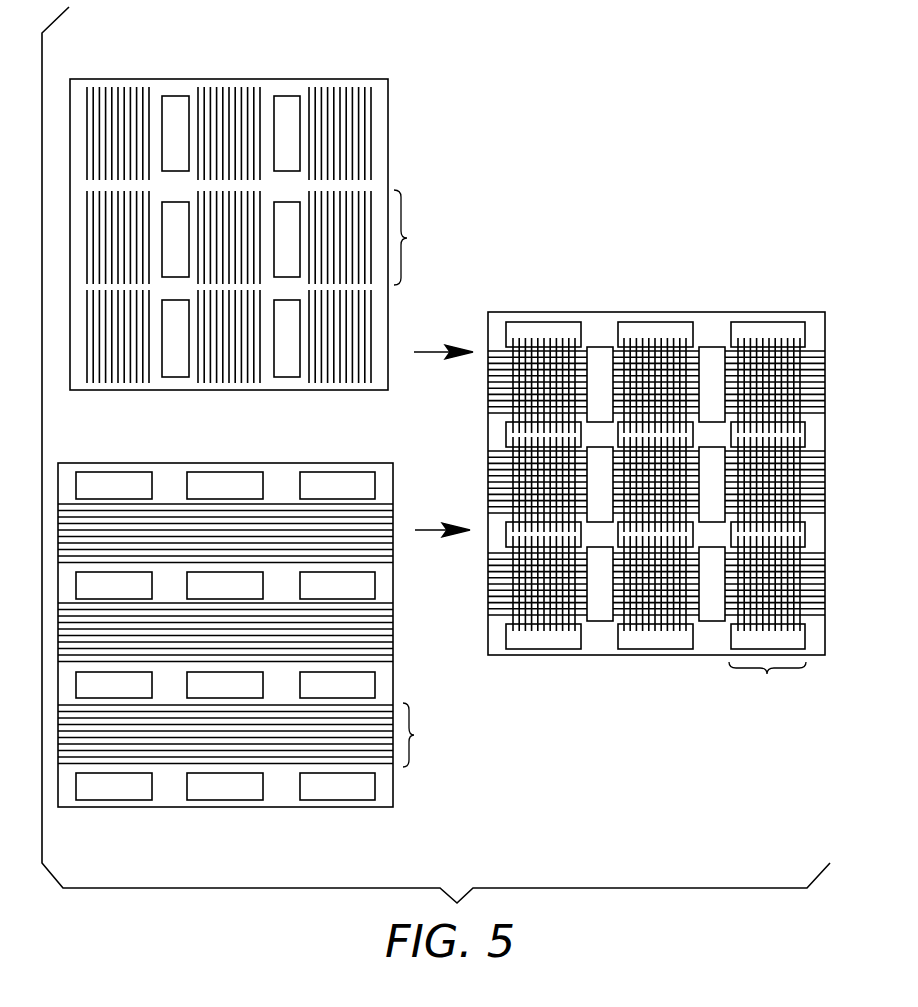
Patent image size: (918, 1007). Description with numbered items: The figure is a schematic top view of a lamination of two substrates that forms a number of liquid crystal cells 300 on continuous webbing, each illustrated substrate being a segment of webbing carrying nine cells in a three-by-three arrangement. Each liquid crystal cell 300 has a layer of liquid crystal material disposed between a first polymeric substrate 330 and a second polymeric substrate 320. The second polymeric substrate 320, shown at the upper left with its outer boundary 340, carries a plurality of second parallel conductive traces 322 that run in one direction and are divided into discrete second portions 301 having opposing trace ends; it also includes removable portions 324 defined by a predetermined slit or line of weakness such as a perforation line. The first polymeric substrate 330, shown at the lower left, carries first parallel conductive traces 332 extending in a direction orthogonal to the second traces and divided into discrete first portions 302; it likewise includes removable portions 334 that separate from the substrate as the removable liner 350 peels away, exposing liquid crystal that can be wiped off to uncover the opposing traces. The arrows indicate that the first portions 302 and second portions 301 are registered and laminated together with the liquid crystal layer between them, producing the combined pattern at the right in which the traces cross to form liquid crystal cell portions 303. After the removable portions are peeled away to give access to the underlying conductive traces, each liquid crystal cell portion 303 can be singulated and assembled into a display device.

The liquid crystal cell 300 is at (656, 477).
The discrete second portions 301 is at (420, 237).
The discrete first portions 302 is at (429, 735).
The liquid crystal cell portion 303 is at (767, 683).
The second polymeric substrate 320 is at (271, 212).
The second parallel conductive traces 322 is at (310, 92).
The removable portion 324 is at (172, 365).
The first polymeric substrate 330 is at (258, 638).
The first parallel conductive traces 332 is at (383, 567).
The removable portion 334 is at (143, 792).
The first substrate 340 is at (378, 91).
The removable liner 350 is at (388, 793).